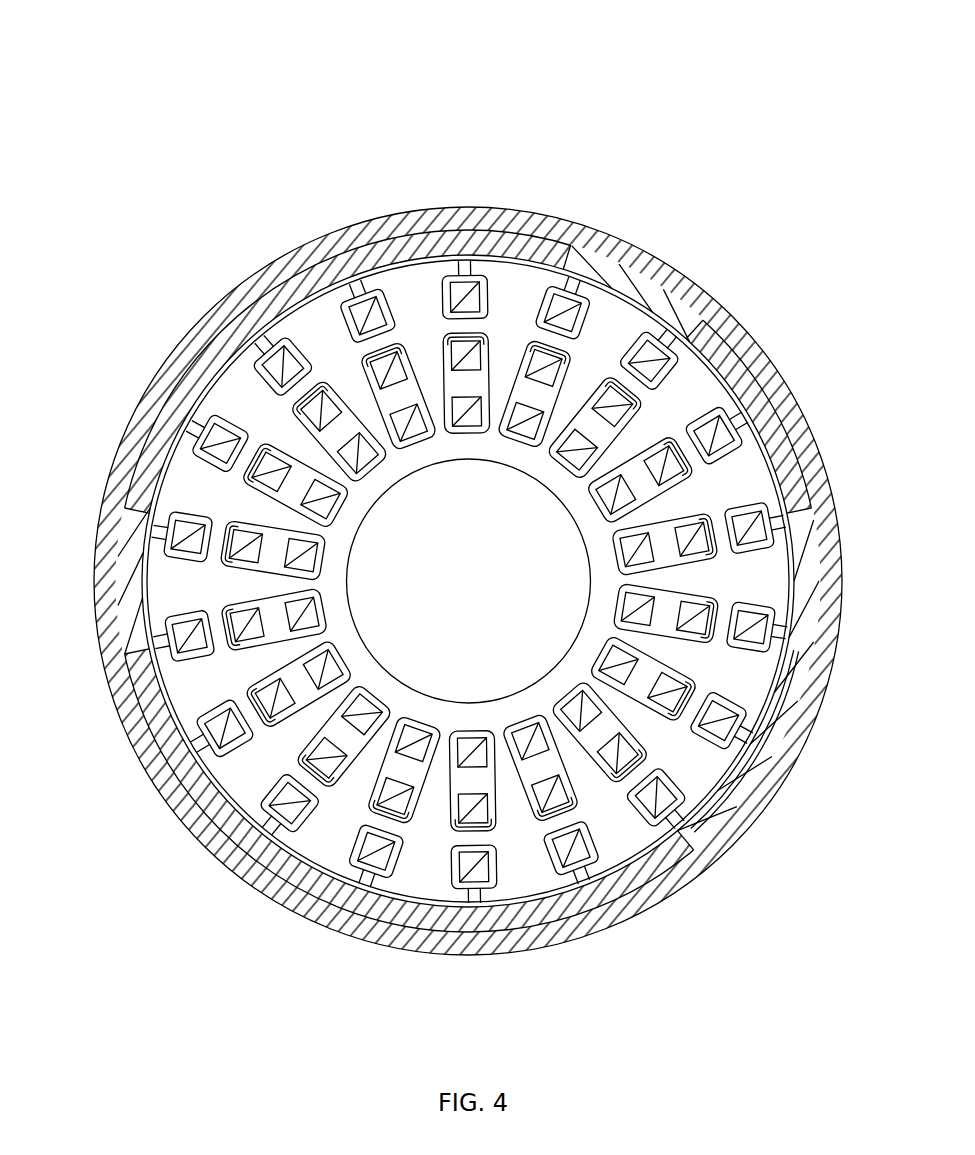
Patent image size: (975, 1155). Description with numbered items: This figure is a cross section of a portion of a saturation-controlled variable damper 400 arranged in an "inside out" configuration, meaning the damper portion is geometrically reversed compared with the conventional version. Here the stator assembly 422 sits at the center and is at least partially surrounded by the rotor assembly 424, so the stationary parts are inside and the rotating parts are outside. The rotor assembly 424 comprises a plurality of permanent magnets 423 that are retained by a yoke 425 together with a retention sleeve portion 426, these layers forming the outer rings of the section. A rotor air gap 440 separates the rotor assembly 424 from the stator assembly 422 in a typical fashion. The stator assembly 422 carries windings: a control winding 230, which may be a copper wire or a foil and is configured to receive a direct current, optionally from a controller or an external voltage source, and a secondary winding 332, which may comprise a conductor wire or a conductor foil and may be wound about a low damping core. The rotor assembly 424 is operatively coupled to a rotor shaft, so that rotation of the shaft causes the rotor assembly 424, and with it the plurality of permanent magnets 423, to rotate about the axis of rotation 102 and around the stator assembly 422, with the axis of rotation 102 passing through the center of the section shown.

The saturation-controlled variable damper 400 is at (238, 84).
The rotor assembly 424 is at (716, 268).
The retention sleeve portion 426 is at (433, 223).
The yoke 425 is at (485, 240).
The permanent magnets 423 is at (290, 287).
The rotor air gap 440 is at (598, 282).
The control winding 230 is at (618, 412).
The secondary winding 332 is at (353, 452).
The axis of rotation 102 is at (470, 580).
The stator assembly 422 is at (500, 680).